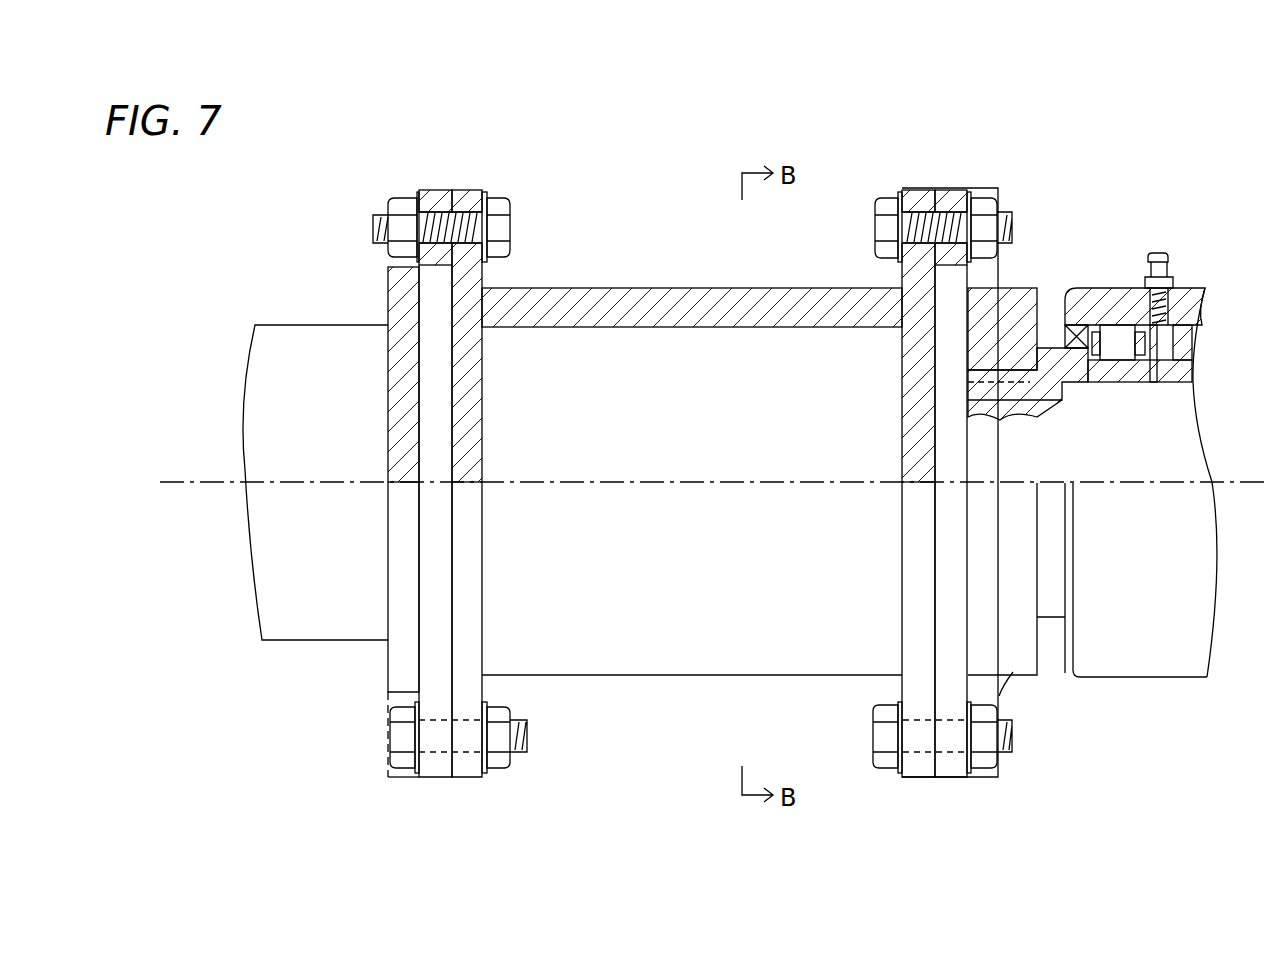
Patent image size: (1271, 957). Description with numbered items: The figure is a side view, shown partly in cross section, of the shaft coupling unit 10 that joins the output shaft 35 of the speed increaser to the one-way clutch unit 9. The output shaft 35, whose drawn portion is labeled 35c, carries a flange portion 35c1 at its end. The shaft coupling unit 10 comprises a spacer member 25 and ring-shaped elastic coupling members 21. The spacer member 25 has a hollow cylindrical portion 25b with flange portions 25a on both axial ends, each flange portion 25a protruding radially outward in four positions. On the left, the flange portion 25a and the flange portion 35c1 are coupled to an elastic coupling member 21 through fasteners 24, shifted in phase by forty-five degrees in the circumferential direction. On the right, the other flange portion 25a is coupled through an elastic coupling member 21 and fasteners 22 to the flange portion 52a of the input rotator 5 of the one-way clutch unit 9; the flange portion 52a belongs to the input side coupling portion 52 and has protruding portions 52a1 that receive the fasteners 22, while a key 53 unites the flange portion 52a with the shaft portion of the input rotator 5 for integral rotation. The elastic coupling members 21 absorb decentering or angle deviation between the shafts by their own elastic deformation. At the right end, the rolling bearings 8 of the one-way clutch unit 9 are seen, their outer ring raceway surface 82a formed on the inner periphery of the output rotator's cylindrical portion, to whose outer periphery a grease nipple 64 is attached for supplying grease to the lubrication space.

The shaft coupling unit 10 is at (571, 155).
The elastic coupling member 21 is at (425, 188).
The flange portion 25a is at (470, 188).
The spacer member 25 is at (624, 214).
The cylindrical portion 25b is at (700, 290).
The fastener 22 is at (863, 190).
The input side coupling portion 52 is at (991, 167).
The protruding portion 52a1 is at (1000, 188).
The input rotator 5 is at (1040, 178).
The flange portion 52a is at (1020, 300).
The outer ring raceway surface 82a is at (1128, 335).
The grease nipple 64 is at (1158, 252).
The pipe portion 35c is at (278, 325).
The output shaft 35 is at (301, 447).
The fastener 24 is at (387, 255).
The flange portion 35c1 is at (395, 660).
The key 53 is at (1000, 392).
The rolling bearing 8 is at (1132, 398).
The one-way clutch unit 9 is at (1141, 698).